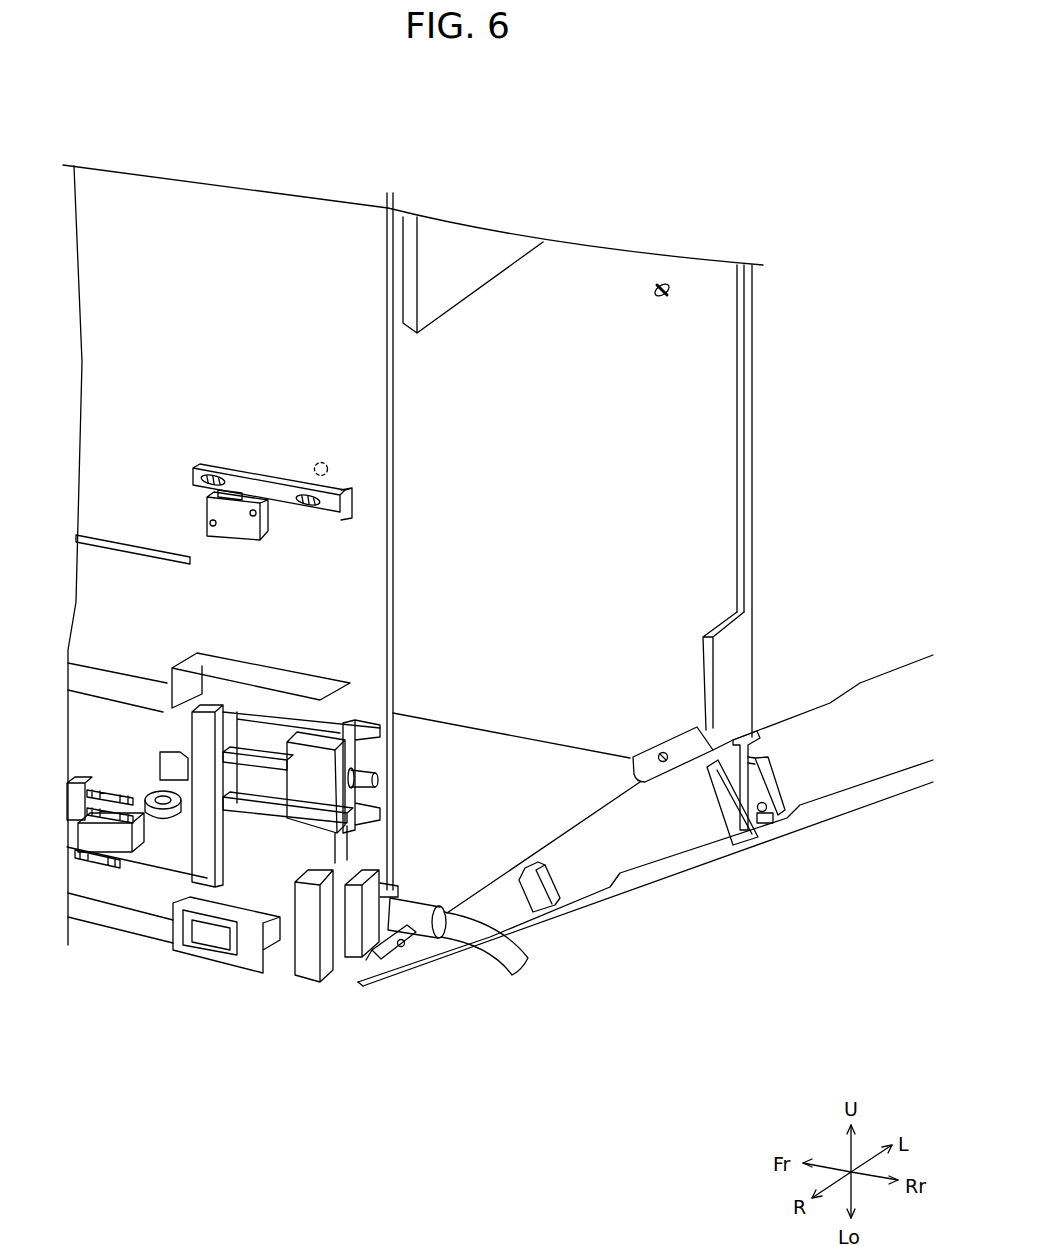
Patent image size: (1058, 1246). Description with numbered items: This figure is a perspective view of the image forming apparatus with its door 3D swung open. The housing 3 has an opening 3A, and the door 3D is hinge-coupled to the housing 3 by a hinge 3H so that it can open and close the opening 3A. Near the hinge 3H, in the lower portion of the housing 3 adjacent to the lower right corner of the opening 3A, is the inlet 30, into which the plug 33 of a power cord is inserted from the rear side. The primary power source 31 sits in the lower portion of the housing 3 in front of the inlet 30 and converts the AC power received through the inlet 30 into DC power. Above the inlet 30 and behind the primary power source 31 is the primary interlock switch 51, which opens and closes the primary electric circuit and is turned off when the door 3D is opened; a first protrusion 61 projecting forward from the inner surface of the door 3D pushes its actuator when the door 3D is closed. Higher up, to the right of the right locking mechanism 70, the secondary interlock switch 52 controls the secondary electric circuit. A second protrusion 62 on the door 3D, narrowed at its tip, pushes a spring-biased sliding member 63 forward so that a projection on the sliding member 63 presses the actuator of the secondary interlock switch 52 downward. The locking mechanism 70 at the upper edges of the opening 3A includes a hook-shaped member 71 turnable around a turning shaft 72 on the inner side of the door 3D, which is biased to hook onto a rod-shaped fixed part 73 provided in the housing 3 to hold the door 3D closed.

The housing 3 is at (858, 290).
The opening 3A is at (495, 282).
The hinge 3H is at (665, 727).
The door 3D is at (587, 908).
The inlet 30 is at (355, 962).
The primary power source 31 is at (150, 853).
The plug 33 is at (427, 940).
The primary interlock switch 51 is at (308, 792).
The secondary interlock switch 52 is at (205, 508).
The first protrusion 61 is at (553, 877).
The second protrusion 62 is at (708, 800).
The sliding member 63 is at (245, 470).
The locking mechanism 70 is at (587, 587).
The hook-shaped member 71 is at (778, 760).
The turning shaft 72 is at (773, 817).
The fixed part 73 is at (657, 300).